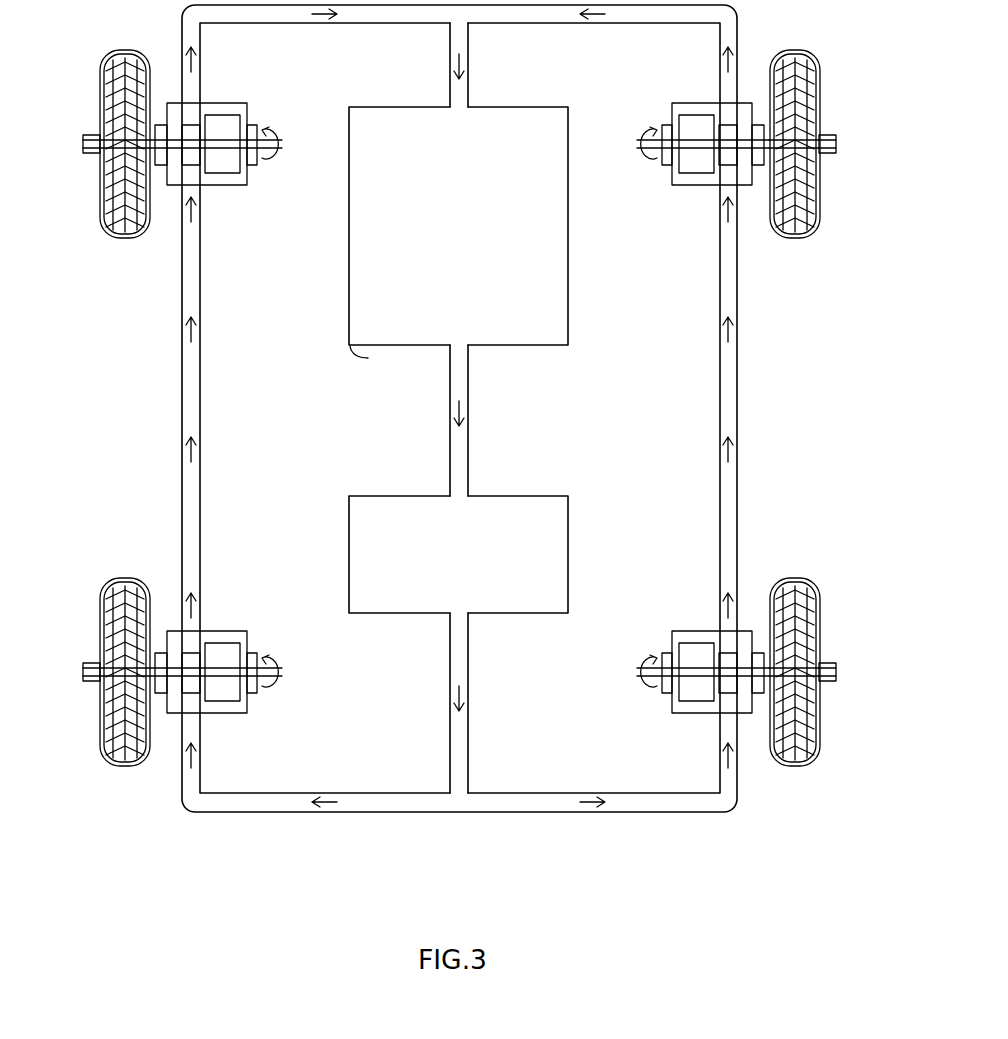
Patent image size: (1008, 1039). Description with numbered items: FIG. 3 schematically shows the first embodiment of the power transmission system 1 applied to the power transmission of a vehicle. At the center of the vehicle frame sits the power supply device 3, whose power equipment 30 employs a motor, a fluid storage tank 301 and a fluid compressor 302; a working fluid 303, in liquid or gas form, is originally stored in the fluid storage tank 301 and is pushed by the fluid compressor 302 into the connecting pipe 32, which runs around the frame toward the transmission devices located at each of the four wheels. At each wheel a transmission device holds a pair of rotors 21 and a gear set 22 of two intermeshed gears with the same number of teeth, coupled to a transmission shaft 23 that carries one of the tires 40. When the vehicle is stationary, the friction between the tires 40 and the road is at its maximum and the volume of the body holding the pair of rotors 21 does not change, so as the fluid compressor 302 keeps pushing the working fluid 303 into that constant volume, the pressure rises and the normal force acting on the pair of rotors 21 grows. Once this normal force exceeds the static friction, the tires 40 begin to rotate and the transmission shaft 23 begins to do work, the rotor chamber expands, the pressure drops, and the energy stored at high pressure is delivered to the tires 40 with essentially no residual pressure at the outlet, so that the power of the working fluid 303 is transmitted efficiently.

The power transmission system 1 is at (172, 181).
The power supply device 3 is at (681, 391).
The pair of rotors 21 is at (190, 128).
The gear set 22 is at (218, 167).
The transmission shaft 23 is at (85, 147).
The power equipment 30 is at (521, 360).
The connecting pipe 32 is at (470, 62).
The tires 40 is at (103, 217).
The fluid storage tank 301 is at (542, 305).
The fluid compressor 302 is at (490, 554).
The working fluid 303 is at (190, 493).